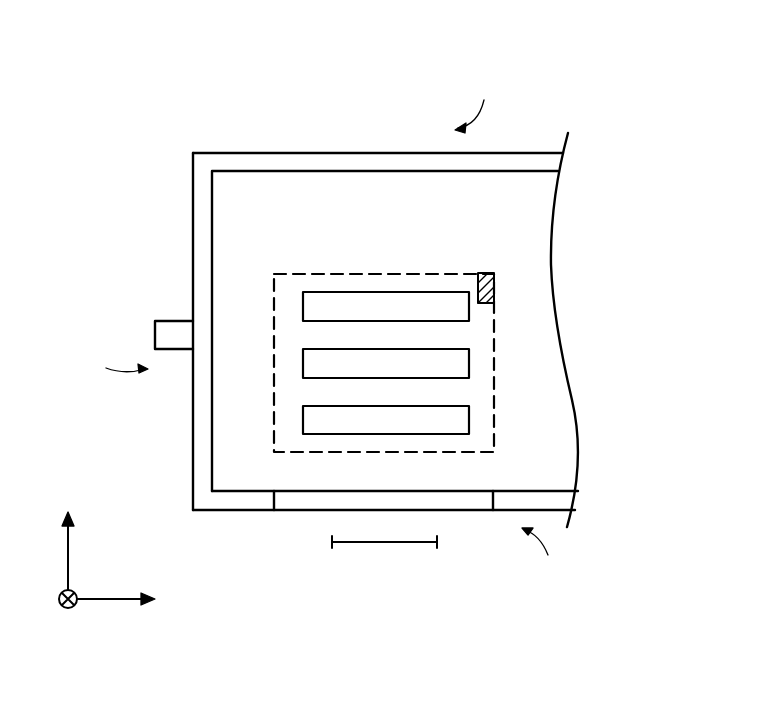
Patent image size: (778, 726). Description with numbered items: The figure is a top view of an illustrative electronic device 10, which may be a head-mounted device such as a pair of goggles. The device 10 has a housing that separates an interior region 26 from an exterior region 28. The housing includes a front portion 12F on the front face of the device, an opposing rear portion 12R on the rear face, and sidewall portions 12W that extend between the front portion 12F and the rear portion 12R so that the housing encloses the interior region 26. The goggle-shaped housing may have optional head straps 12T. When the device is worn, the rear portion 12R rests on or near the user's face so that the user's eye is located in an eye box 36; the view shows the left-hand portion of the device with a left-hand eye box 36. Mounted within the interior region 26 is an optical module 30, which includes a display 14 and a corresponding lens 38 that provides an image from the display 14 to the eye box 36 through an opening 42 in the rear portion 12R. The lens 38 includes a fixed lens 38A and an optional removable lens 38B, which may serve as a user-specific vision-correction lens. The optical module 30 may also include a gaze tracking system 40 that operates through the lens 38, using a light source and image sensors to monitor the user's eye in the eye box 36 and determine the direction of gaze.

The electronic device 10 is at (612, 228).
The front portion 12F is at (398, 153).
The rear portion 12R is at (223, 500).
The straps 12T is at (173, 330).
The sidewall portions 12W is at (193, 186).
The display 14 is at (313, 300).
The interior region 26 is at (284, 193).
The exterior region 28 is at (343, 298).
The optical module 30 is at (432, 272).
The eye box 36 is at (332, 542).
The lens 38 is at (338, 392).
The fixed lens 38A is at (303, 363).
The removable lens 38B is at (303, 418).
The gaze tracking system 40 is at (494, 292).
The opening 42 is at (474, 500).